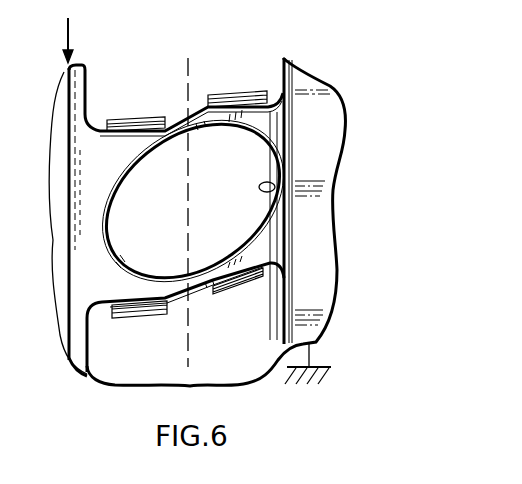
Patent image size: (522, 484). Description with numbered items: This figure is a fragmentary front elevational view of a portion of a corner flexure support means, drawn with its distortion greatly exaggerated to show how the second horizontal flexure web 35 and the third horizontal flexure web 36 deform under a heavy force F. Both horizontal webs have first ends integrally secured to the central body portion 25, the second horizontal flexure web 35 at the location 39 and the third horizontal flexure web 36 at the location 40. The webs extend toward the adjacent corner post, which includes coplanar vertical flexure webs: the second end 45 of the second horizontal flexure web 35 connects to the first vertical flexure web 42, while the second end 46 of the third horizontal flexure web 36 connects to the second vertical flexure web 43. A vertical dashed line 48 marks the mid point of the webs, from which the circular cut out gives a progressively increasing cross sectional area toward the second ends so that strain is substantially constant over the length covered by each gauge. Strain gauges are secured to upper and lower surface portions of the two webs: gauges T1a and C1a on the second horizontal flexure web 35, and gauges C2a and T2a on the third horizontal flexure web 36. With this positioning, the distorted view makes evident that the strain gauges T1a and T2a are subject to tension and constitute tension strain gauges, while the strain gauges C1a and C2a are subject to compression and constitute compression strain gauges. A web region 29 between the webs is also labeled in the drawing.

The force F is at (73, 38).
The central body portion 25 is at (332, 133).
The web 29 is at (275, 188).
The second horizontal flexure web 35 is at (202, 128).
The third horizontal flexure web 36 is at (193, 279).
The first end of second horizontal flexure web 39 is at (273, 124).
The first end of third horizontal flexure web 40 is at (258, 245).
The first vertical flexure web 42 is at (77, 93).
The second vertical flexure web 43 is at (82, 348).
The second end of second horizontal flexure web 45 is at (105, 157).
The second end of third horizontal flexure web 46 is at (102, 287).
The vertical dashed line 48 is at (188, 78).
The compression strain gauge C1a is at (125, 118).
The tension strain gauge T1a is at (237, 91).
The tension strain gauge T2a is at (137, 319).
The compression strain gauge C2a is at (248, 293).